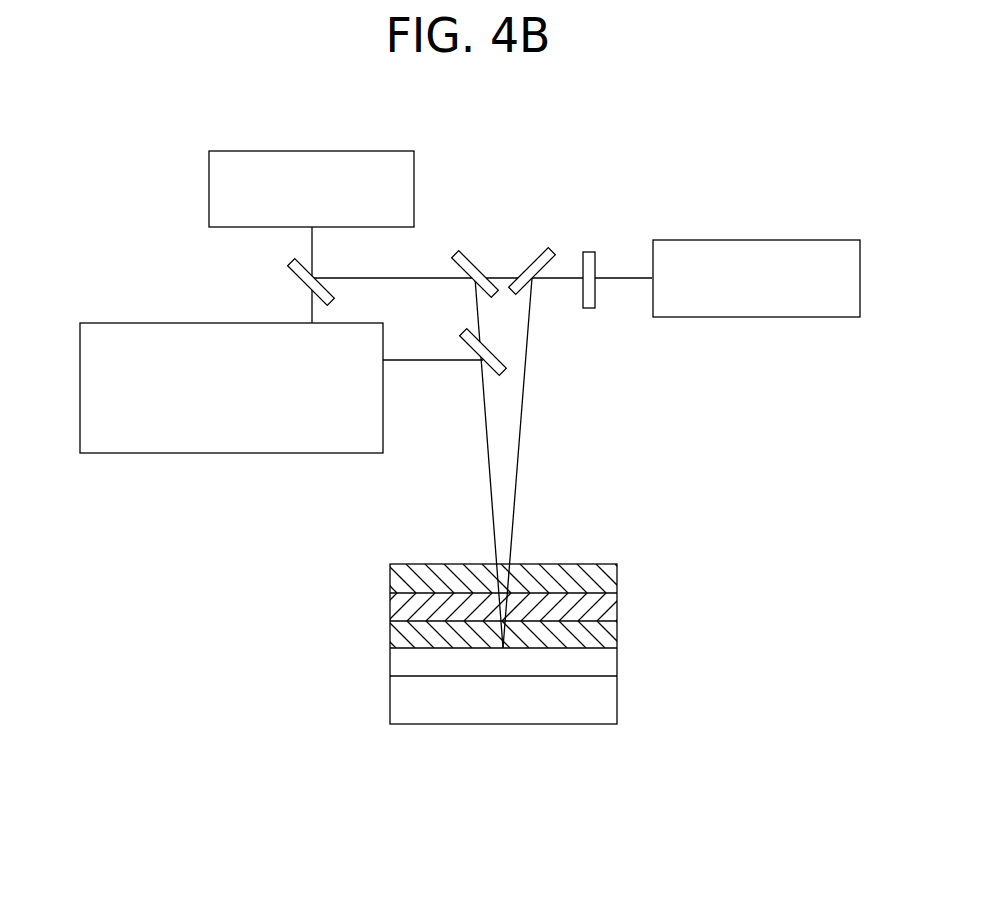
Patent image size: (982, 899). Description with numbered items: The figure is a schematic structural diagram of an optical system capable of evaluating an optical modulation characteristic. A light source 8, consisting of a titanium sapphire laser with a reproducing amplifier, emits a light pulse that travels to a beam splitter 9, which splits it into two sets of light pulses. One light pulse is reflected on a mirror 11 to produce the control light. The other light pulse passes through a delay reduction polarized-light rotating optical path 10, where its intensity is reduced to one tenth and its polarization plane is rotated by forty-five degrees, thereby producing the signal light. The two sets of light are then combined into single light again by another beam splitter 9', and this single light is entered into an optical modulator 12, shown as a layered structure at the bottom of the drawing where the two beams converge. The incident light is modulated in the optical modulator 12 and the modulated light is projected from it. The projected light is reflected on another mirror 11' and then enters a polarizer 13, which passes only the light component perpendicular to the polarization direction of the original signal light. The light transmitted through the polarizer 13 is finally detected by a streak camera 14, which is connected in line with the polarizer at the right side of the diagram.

The light source 8 is at (312, 151).
The beam splitter 9 is at (279, 282).
The beam splitter 9' is at (466, 378).
The delay reduction polarized-light rotating optical path 10 is at (270, 453).
The mirror 11 is at (469, 235).
The mirror 11' is at (536, 234).
The optical modulator 12 is at (495, 644).
The polarizer 13 is at (589, 308).
The streak camera 14 is at (740, 240).